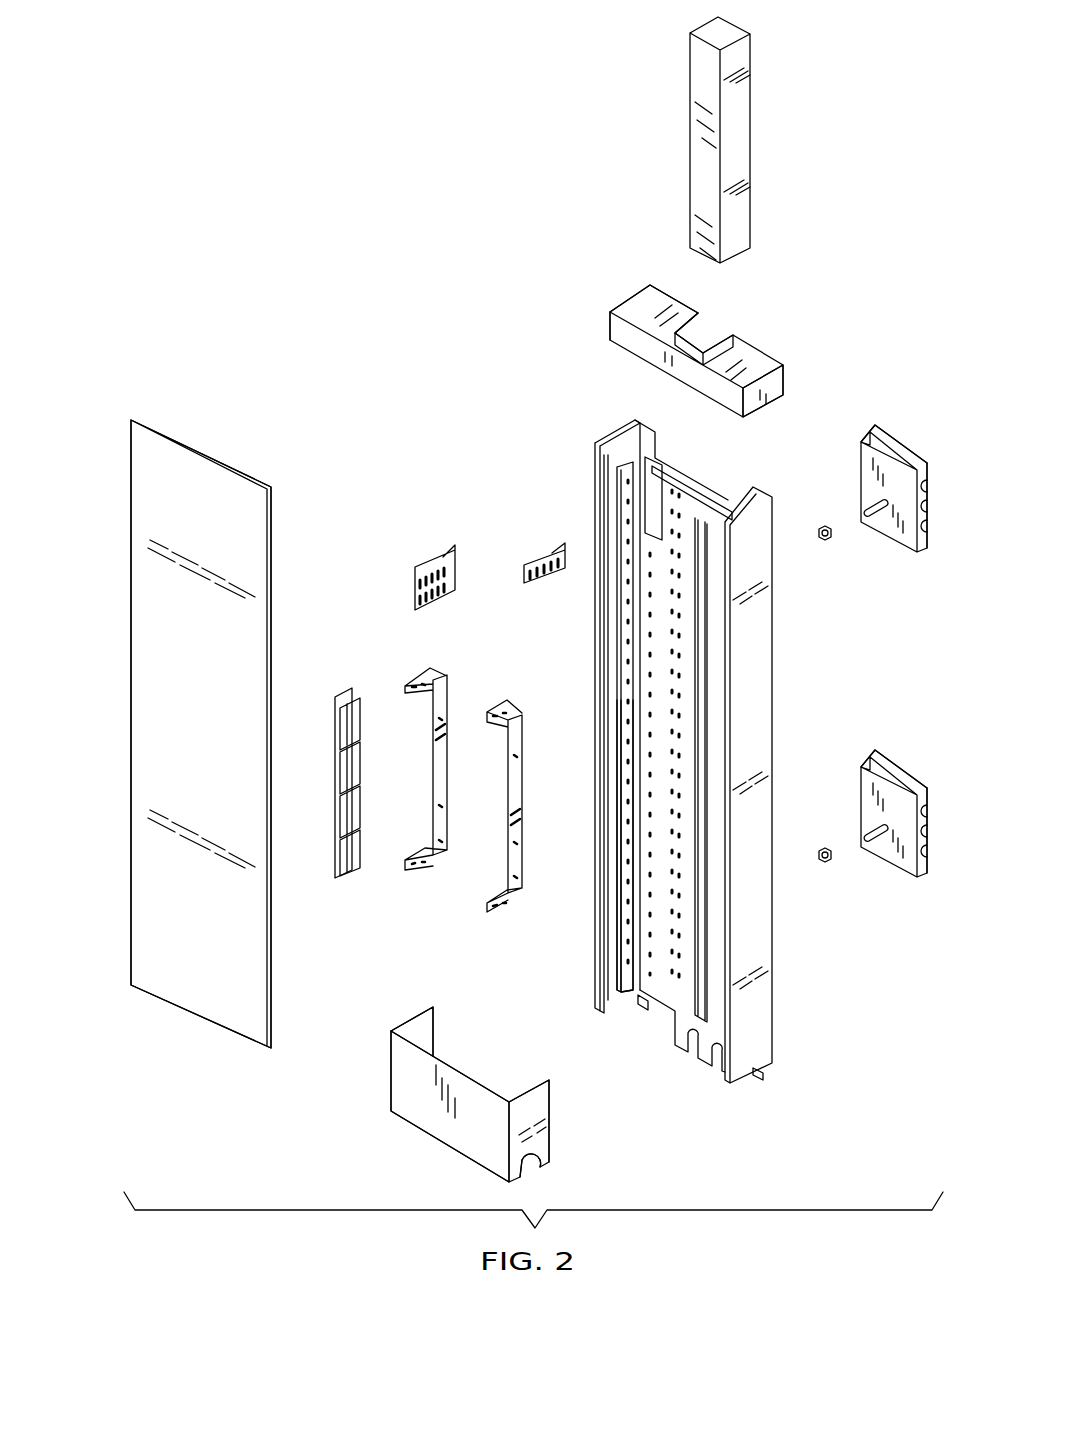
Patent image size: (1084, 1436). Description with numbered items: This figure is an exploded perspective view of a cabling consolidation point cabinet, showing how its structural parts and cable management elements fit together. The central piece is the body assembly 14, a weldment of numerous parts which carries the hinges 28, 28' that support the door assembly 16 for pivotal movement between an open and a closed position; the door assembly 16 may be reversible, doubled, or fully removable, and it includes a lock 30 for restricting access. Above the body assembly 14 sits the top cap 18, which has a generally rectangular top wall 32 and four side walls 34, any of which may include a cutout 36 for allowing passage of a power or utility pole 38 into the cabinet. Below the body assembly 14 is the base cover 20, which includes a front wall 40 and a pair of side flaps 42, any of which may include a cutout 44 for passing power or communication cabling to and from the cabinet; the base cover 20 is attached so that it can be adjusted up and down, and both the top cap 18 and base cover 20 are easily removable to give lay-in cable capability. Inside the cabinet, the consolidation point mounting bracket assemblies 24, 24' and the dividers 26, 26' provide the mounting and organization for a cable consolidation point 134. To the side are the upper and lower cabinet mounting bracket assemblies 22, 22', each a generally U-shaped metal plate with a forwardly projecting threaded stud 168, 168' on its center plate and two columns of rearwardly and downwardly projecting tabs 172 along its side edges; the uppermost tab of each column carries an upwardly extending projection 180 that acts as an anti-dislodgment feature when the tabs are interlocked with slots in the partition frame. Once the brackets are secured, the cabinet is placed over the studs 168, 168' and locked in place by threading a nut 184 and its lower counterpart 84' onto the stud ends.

The body assembly 14 is at (773, 715).
The door assembly 16 is at (136, 442).
The top cap 18 is at (763, 355).
The base cover 20 is at (452, 1065).
The cabinet mounting bracket assembly 22 is at (894, 516).
The cabinet mounting bracket assembly 22' is at (894, 837).
The consolidation point mounting bracket assembly 24 is at (450, 767).
The consolidation point mounting bracket assembly 24' is at (524, 800).
The divider 26 is at (423, 561).
The divider 26' is at (536, 543).
The hinge 28 is at (596, 727).
The hinge 28' is at (590, 846).
The lock 30 is at (258, 765).
The top wall 32 is at (645, 310).
The side wall 34 is at (645, 350).
The cutout 36 is at (700, 345).
The power or utility pole 38 is at (752, 90).
The front wall 40 is at (405, 1075).
The side flap 42 is at (418, 1027).
The cutout 44 is at (525, 1168).
The cable consolidation point 134 is at (345, 697).
The threaded stud 168 is at (846, 493).
The threaded stud 168' is at (842, 820).
The tabs 172 is at (928, 540).
The upwardly extending projection 180 is at (927, 463).
The nut 184 is at (823, 545).
The nut 84' is at (815, 885).